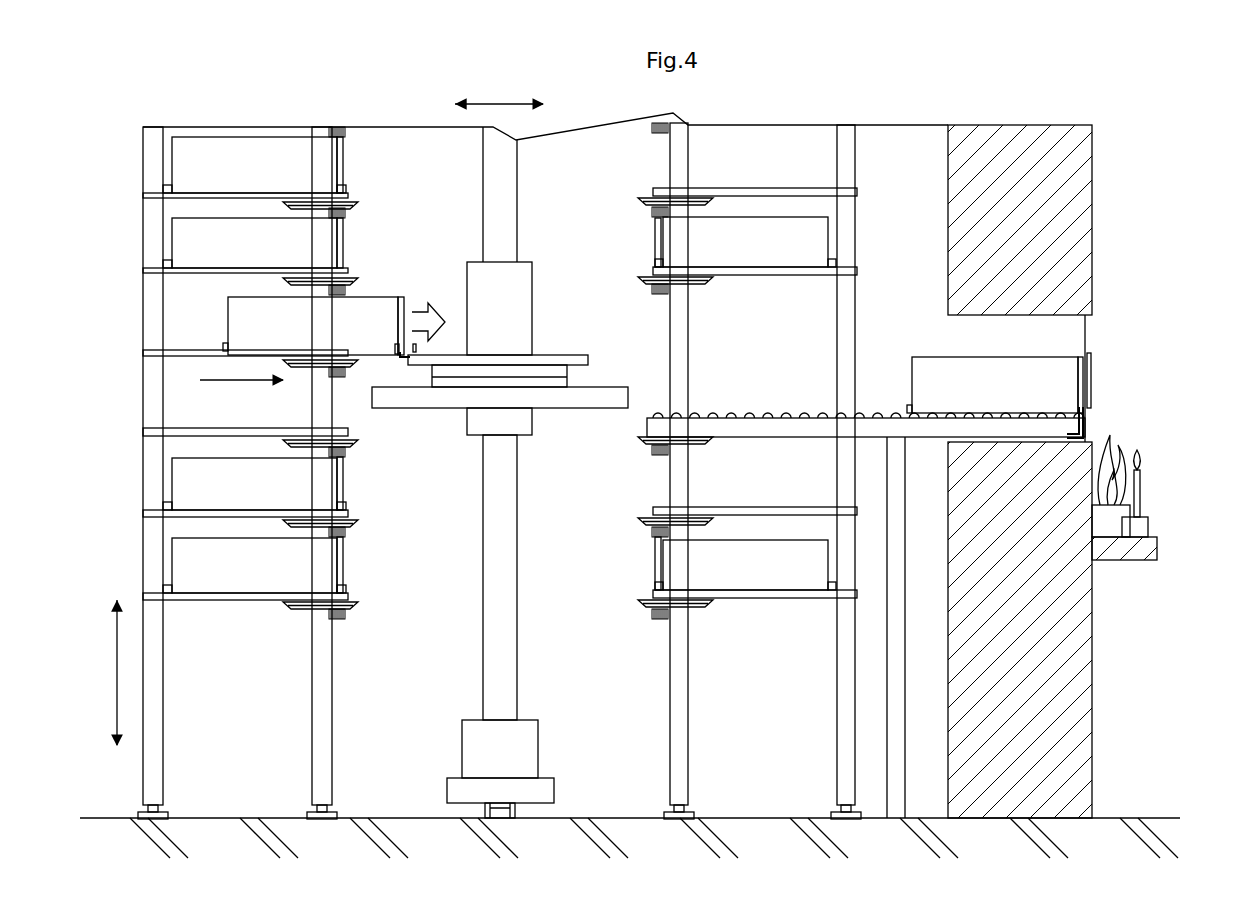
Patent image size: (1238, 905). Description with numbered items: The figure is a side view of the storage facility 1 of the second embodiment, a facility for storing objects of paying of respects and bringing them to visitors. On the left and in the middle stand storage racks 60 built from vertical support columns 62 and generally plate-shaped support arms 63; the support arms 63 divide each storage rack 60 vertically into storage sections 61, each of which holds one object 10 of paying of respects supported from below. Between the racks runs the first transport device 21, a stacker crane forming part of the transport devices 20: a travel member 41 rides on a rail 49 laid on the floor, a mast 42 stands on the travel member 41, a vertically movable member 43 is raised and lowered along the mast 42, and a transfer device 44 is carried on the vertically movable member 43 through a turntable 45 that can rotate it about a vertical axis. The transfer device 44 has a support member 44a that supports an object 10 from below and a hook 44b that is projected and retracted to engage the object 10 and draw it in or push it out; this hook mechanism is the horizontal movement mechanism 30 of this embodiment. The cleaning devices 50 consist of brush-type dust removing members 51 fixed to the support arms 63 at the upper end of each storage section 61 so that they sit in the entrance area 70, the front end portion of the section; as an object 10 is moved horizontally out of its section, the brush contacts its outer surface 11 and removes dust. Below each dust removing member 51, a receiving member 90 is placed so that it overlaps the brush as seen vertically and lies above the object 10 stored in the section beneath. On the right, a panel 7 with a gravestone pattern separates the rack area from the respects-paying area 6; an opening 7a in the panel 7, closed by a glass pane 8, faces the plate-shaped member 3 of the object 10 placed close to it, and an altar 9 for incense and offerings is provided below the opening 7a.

The storage facility 1 is at (647, 463).
The plate-shaped member 3 is at (627, 365).
The respects-paying area 6 is at (1153, 429).
The panel 7 is at (1061, 471).
The opening 7a is at (1098, 357).
The glass pane 8 is at (1095, 379).
The altar 9 is at (1125, 560).
The object of paying of respects 10 is at (240, 333).
The outer surface 11 is at (627, 365).
The transport device 20 is at (728, 615).
The first transport device 21 is at (474, 488).
The horizontal movement mechanism 30 is at (500, 390).
The travel member 41 is at (545, 785).
The mast 42 is at (483, 642).
The vertically movable member 43 is at (455, 410).
The transfer device 44 is at (489, 374).
The support member 44a is at (550, 358).
The hook 44b is at (403, 364).
The turntable 45 is at (445, 384).
The rail 49 is at (485, 812).
The cleaning device 50 is at (498, 396).
The dust removing member 51 is at (350, 213).
The storage rack 60 is at (648, 443).
The storage section 61 is at (486, 443).
The support column 62 is at (318, 765).
The support arm 63 is at (162, 268).
The entrance area 70 is at (356, 577).
The receiving member 90 is at (352, 200).